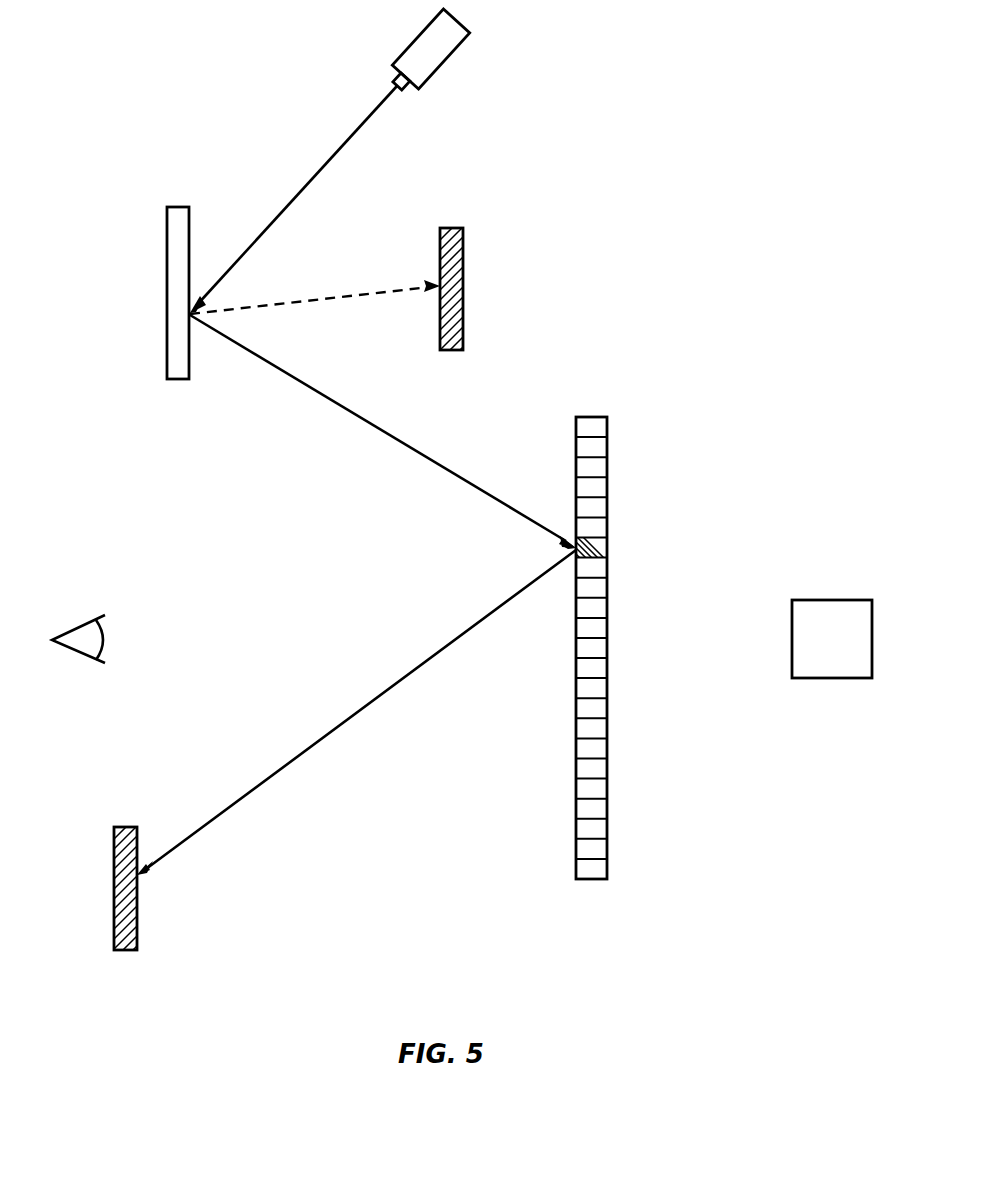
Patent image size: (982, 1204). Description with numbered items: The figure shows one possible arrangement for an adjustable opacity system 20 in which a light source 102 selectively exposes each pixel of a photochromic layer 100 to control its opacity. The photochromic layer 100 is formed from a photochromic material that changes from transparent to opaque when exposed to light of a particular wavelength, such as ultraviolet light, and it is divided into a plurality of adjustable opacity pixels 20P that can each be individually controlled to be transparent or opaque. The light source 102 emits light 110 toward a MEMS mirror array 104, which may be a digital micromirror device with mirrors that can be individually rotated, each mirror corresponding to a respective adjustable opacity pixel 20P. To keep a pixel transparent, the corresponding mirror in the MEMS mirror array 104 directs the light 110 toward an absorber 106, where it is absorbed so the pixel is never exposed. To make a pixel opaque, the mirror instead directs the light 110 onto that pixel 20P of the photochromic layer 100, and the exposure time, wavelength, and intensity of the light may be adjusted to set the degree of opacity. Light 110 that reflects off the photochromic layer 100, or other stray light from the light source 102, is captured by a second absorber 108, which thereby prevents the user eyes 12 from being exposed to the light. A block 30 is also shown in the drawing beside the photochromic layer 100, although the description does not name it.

The adjustable opacity system 20 is at (683, 197).
The adjustable opacity pixel 20P is at (600, 427).
The photochromic layer 100 is at (619, 668).
The light source 102 is at (447, 64).
The MEMS mirror array 104 is at (167, 232).
The absorber 106 is at (463, 258).
The absorber 108 is at (137, 928).
The light 110 is at (317, 176).
The user eyes 12 is at (76, 628).
The controller 30 is at (830, 600).